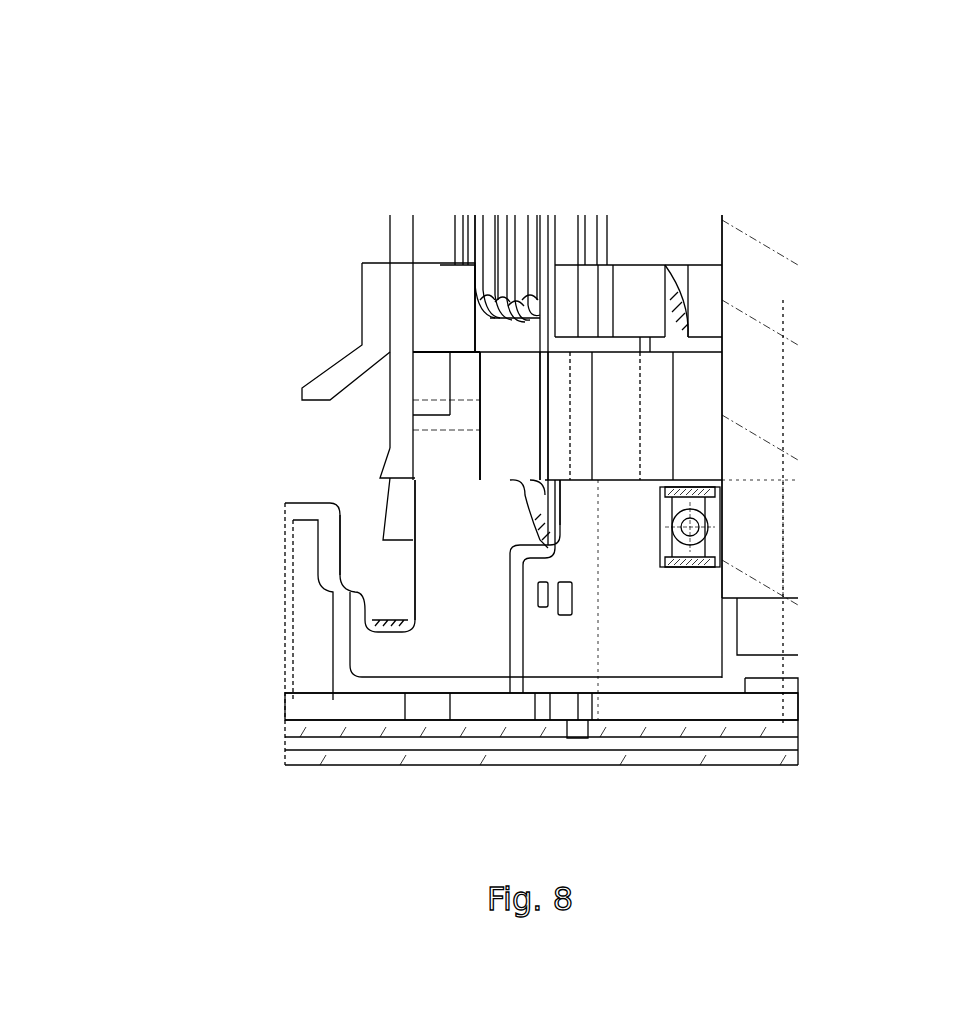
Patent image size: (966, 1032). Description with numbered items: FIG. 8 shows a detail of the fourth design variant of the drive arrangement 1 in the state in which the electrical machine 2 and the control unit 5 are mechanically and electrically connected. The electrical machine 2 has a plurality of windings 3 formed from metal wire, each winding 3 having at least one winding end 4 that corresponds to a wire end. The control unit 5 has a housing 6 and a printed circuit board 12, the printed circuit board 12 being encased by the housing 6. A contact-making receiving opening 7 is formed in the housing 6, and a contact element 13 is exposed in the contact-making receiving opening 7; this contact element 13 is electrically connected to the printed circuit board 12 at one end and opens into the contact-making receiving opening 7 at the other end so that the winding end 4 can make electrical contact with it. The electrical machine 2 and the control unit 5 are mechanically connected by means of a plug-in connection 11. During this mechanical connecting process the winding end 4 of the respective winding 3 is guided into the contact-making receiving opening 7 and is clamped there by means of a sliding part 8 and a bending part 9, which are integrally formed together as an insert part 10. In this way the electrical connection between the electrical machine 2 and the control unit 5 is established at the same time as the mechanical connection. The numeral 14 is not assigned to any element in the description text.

The drive arrangement 1 is at (270, 128).
The electrical machine 2 is at (765, 290).
The winding 3 is at (493, 243).
The winding end 4 is at (535, 420).
The control unit 5 is at (815, 538).
The housing 6 is at (440, 587).
The contact-making receiving opening 7 is at (515, 488).
The sliding part 8 is at (480, 394).
The bending part 9 is at (446, 416).
The insert part 10 is at (446, 416).
The plug-in connection 11 is at (362, 480).
The printed circuit board 12 is at (482, 700).
The contact element 13 is at (517, 627).
The screw 14 is at (690, 527).